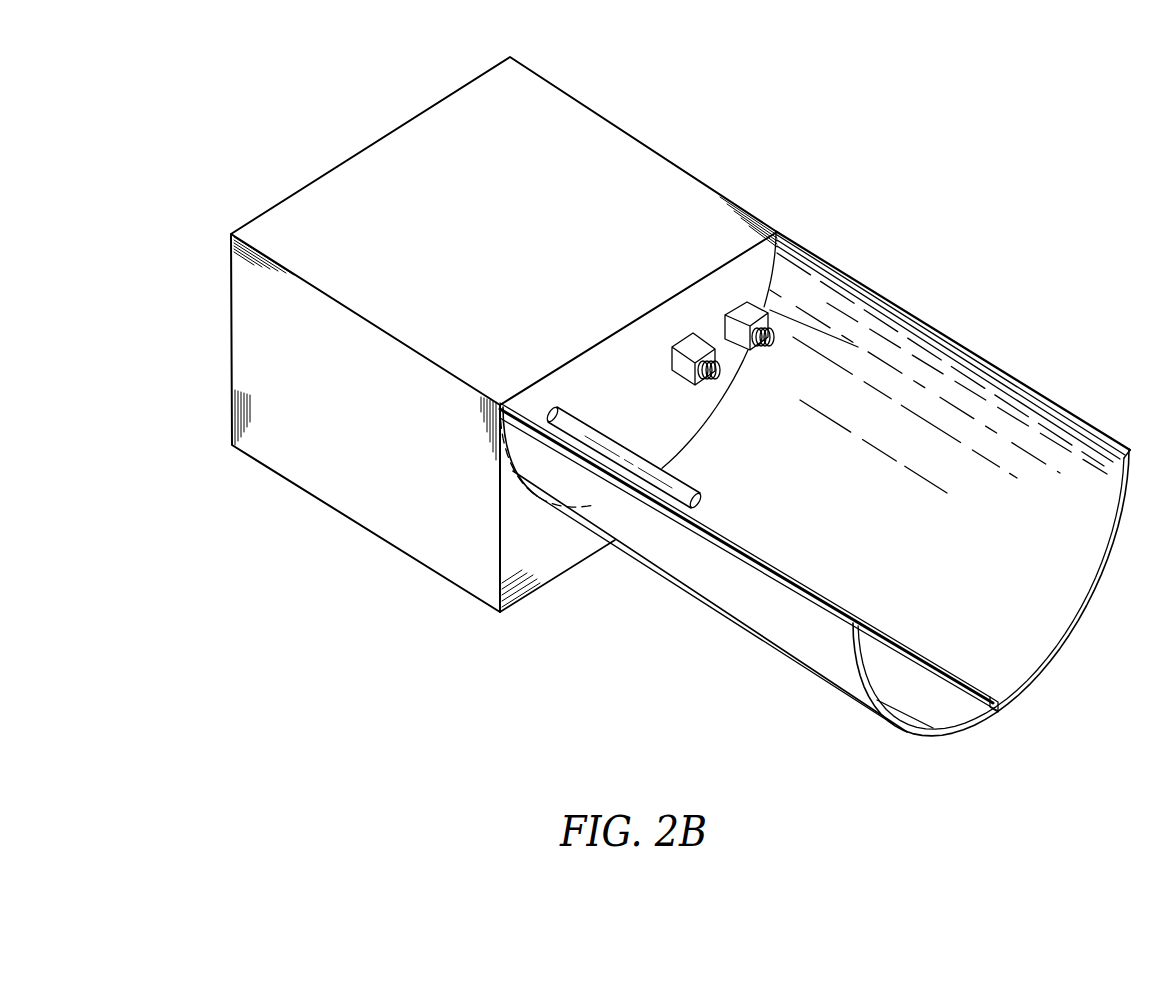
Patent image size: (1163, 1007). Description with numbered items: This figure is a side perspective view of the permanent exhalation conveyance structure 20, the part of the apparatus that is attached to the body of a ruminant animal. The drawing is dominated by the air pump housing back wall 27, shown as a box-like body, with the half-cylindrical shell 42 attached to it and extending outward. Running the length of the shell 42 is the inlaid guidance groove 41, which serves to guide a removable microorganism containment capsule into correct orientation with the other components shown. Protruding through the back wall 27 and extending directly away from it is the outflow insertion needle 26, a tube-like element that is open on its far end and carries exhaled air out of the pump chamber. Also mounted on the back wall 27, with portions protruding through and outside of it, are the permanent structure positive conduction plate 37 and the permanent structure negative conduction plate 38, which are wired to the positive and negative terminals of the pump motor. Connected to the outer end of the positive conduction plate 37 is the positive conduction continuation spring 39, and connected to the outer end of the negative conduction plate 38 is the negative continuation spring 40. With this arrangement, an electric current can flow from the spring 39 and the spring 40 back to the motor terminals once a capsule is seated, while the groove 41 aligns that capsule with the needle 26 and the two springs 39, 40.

The permanent exhalation conveyance structure 20 is at (154, 48).
The outflow insertion needle 26 is at (600, 433).
The air pump housing back wall 27 is at (549, 543).
The permanent structure positive conduction plate 37 is at (746, 305).
The permanent structure negative conduction plate 38 is at (691, 345).
The positive conduction continuation spring 39 is at (758, 348).
The negative continuation spring 40 is at (703, 382).
The inlaid guidance groove 41 is at (987, 693).
The half-cylindrical shell 42 is at (748, 586).